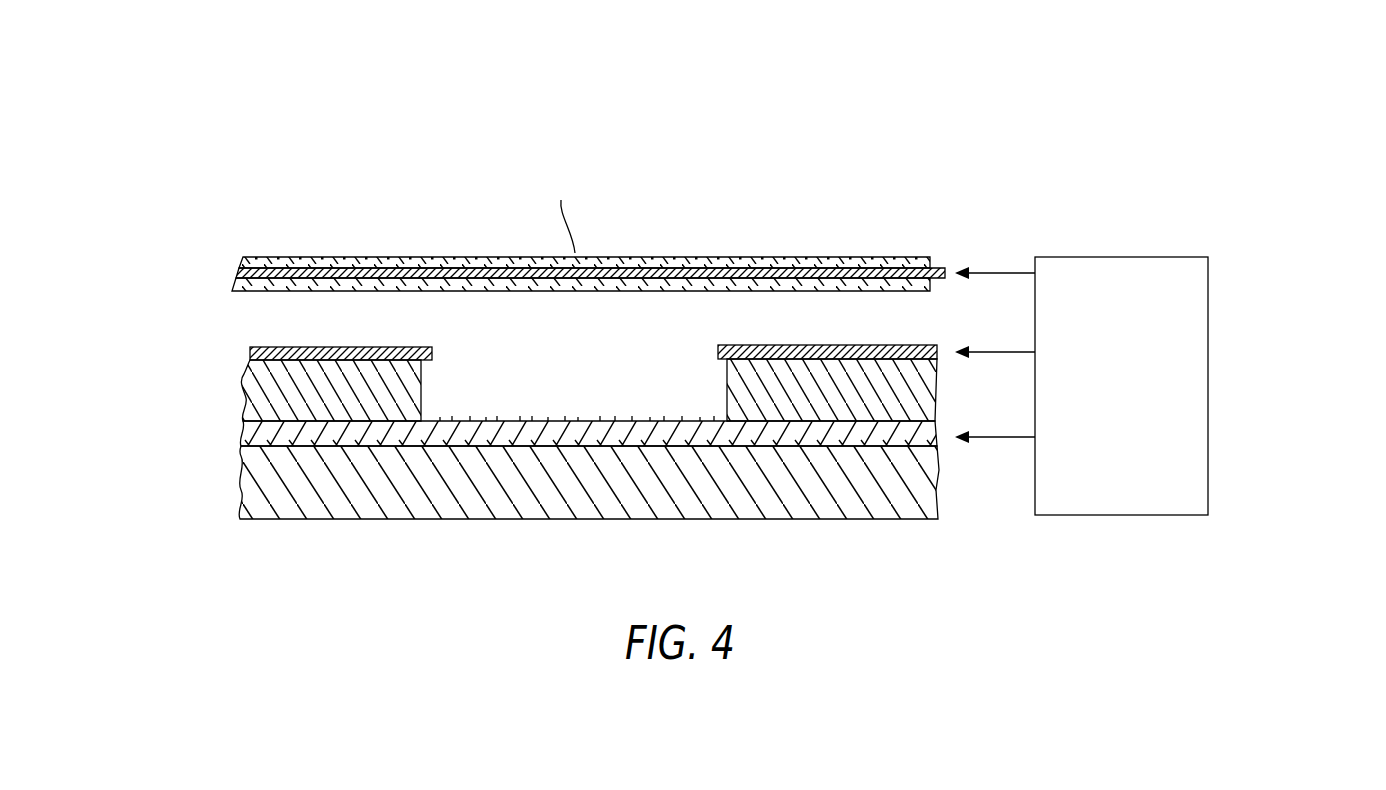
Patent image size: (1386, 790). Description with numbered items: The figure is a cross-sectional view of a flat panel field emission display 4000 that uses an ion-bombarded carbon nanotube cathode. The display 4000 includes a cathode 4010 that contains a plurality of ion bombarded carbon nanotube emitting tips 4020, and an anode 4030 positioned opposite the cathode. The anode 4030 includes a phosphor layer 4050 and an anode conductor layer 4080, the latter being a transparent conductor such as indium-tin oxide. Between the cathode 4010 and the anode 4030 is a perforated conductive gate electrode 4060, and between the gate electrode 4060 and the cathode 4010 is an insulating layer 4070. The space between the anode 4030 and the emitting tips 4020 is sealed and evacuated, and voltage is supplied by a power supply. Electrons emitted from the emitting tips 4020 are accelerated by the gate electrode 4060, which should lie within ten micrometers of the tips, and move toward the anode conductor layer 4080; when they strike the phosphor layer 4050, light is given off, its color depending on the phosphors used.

The flat panel field emission display 4000 is at (741, 82).
The cathode 4010 is at (240, 437).
The carbon nanotube emitting tips 4020 is at (513, 420).
The anode 4030 is at (214, 275).
The phosphor layer 4050 is at (337, 291).
The gate electrode 4060 is at (282, 347).
The insulating layer 4070 is at (244, 375).
The anode conductor layer 4080 is at (950, 264).